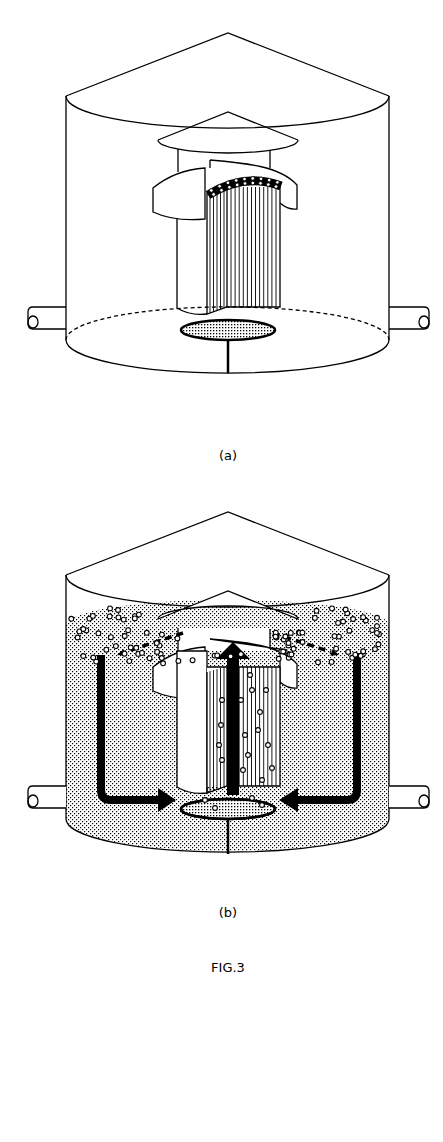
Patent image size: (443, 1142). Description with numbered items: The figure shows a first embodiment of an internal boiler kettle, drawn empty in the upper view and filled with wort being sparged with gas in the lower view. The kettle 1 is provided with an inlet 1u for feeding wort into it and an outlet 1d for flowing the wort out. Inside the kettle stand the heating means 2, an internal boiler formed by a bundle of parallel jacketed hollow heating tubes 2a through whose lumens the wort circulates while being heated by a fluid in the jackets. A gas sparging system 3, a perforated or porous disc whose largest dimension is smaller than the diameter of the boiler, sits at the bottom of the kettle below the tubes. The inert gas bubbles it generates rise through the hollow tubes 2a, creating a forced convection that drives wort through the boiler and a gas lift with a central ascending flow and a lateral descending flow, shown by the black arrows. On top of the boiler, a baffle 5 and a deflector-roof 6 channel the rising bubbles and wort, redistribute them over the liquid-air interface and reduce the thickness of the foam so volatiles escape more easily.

The kettle 1 is at (107, 52).
The inlet 1u is at (56, 307).
The outlet 1d is at (418, 307).
The heating means 2 is at (176, 243).
The hollow heating tubes 2a is at (274, 251).
The gas sparging system 3 is at (245, 343).
The baffle 5 is at (152, 196).
The deflector-roof 6 is at (160, 140).